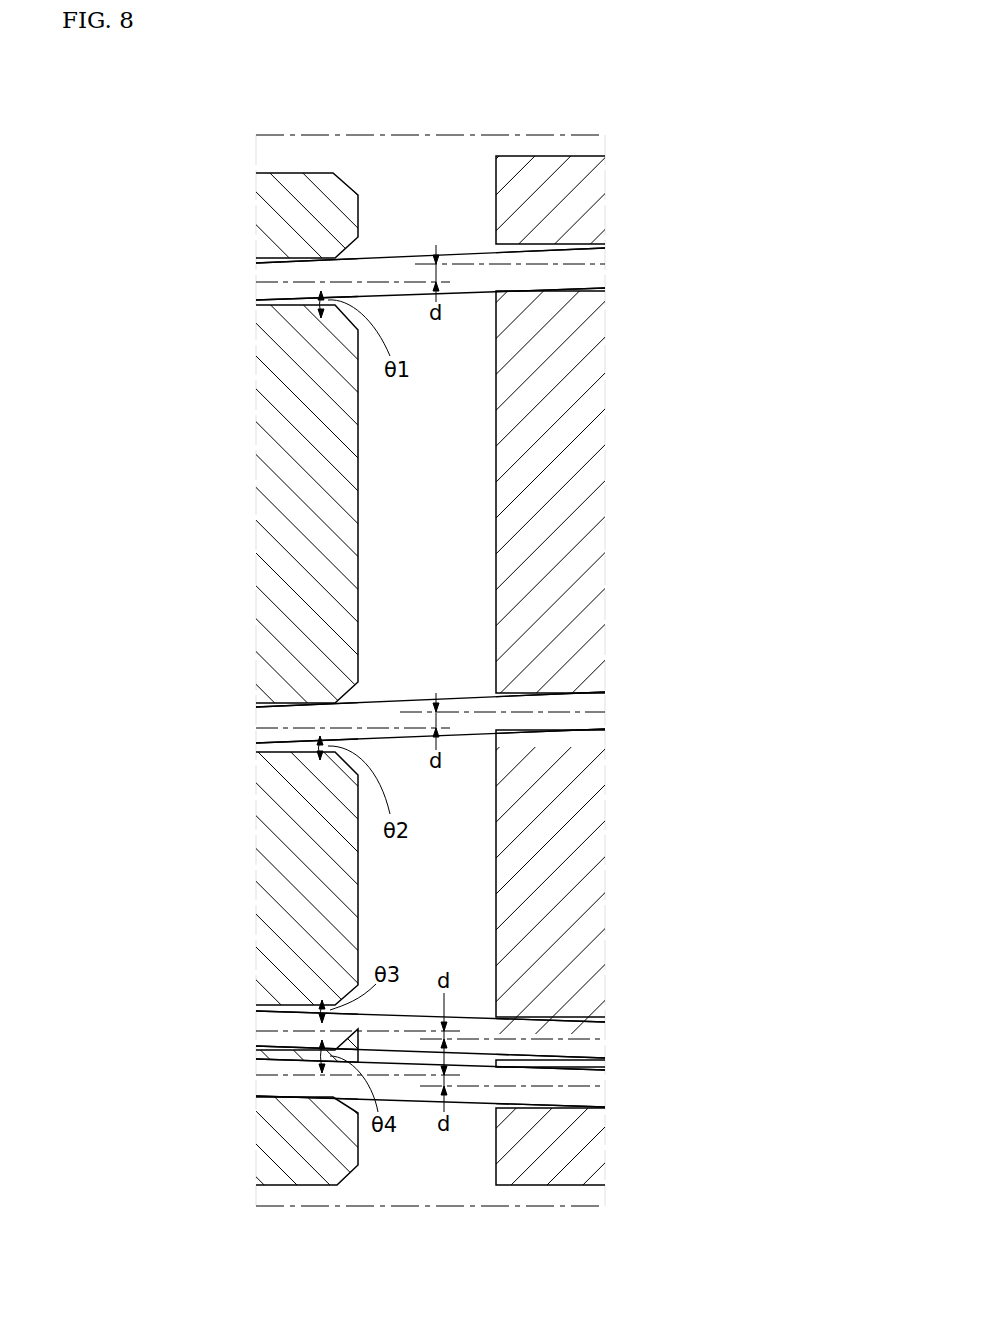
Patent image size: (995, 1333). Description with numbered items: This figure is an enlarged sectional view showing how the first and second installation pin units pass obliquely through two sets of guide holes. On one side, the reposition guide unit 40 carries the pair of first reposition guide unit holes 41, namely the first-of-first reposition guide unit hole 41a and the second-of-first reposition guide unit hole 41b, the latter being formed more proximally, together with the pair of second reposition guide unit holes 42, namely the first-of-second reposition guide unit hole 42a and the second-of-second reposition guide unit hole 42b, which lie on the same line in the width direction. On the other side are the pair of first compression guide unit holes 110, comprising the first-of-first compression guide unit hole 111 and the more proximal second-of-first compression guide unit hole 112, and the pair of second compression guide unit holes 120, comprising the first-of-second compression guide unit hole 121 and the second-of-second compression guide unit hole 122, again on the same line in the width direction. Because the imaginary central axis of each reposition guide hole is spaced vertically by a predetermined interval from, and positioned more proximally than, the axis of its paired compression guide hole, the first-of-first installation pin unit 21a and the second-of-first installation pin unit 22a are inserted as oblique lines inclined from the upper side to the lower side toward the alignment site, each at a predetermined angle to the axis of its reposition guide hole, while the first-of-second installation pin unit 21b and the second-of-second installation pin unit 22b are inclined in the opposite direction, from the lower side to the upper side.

The first-of-first installation pin unit 21a is at (386, 268).
The second-of-first installation pin unit 22a is at (470, 705).
The first-of-second installation pin unit 21b is at (394, 1020).
The second-of-second installation pin unit 22b is at (399, 1095).
The inner member 40 is at (280, 200).
The first reposition guide unit holes 41 is at (156, 267).
The first-of-first reposition guide unit hole 41a is at (299, 280).
The second-of-first reposition guide unit hole 41b is at (303, 722).
The second reposition guide unit holes 42 is at (156, 1004).
The first-of-second reposition guide unit hole 42a is at (277, 1034).
The second-of-second reposition guide unit hole 42b is at (289, 1077).
The first compression guide unit holes 110 is at (702, 310).
The first-of-first compression guide unit hole 111 is at (561, 270).
The second-of-first compression guide unit hole 112 is at (563, 722).
The second compression guide unit holes 120 is at (696, 1038).
The first-of-second compression guide unit hole 121 is at (574, 1042).
The second-of-second compression guide unit hole 122 is at (571, 1088).